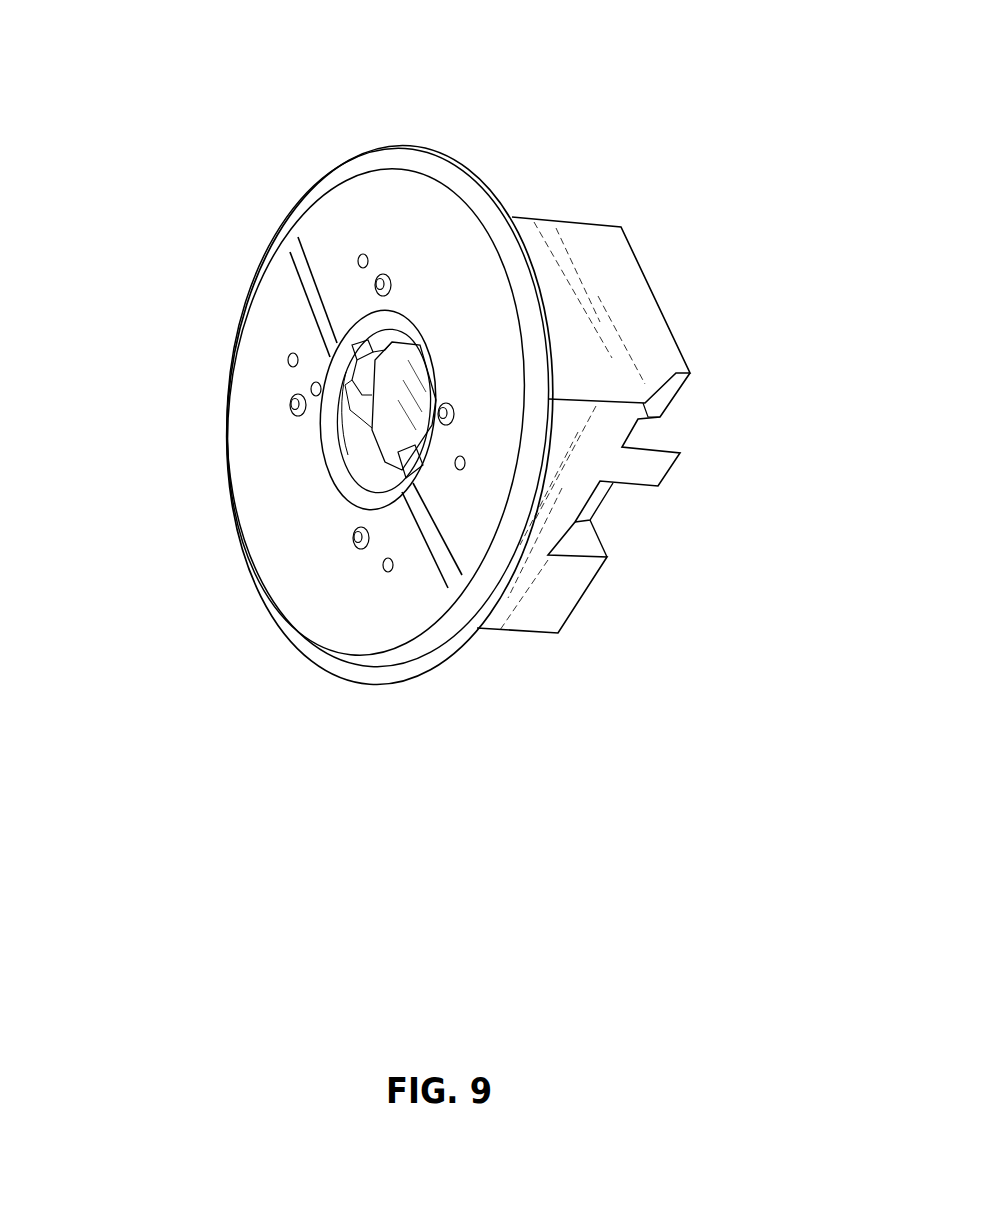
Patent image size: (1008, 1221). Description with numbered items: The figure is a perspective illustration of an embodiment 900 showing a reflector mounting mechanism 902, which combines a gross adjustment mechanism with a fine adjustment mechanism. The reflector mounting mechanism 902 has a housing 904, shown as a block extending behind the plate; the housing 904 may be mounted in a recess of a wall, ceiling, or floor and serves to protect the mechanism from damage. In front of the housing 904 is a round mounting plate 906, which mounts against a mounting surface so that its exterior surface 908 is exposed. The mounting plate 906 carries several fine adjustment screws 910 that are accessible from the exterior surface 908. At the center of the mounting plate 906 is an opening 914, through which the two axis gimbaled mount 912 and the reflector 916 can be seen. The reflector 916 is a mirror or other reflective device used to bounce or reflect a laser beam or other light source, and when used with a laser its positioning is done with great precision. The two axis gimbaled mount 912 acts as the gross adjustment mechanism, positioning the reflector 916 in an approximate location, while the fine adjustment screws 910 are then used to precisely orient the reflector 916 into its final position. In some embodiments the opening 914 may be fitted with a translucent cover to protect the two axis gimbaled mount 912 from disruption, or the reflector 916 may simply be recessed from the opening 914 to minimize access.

The embodiment 900 is at (459, 435).
The reflector mounting mechanism 902 is at (459, 349).
The housing 904 is at (643, 307).
The mounting plate 906 is at (392, 349).
The exterior surface 908 is at (356, 218).
The fine adjustment screw 910 is at (294, 299).
The two axis gimbaled mount 912 is at (247, 439).
The opening 914 is at (327, 425).
The reflector 916 is at (383, 441).